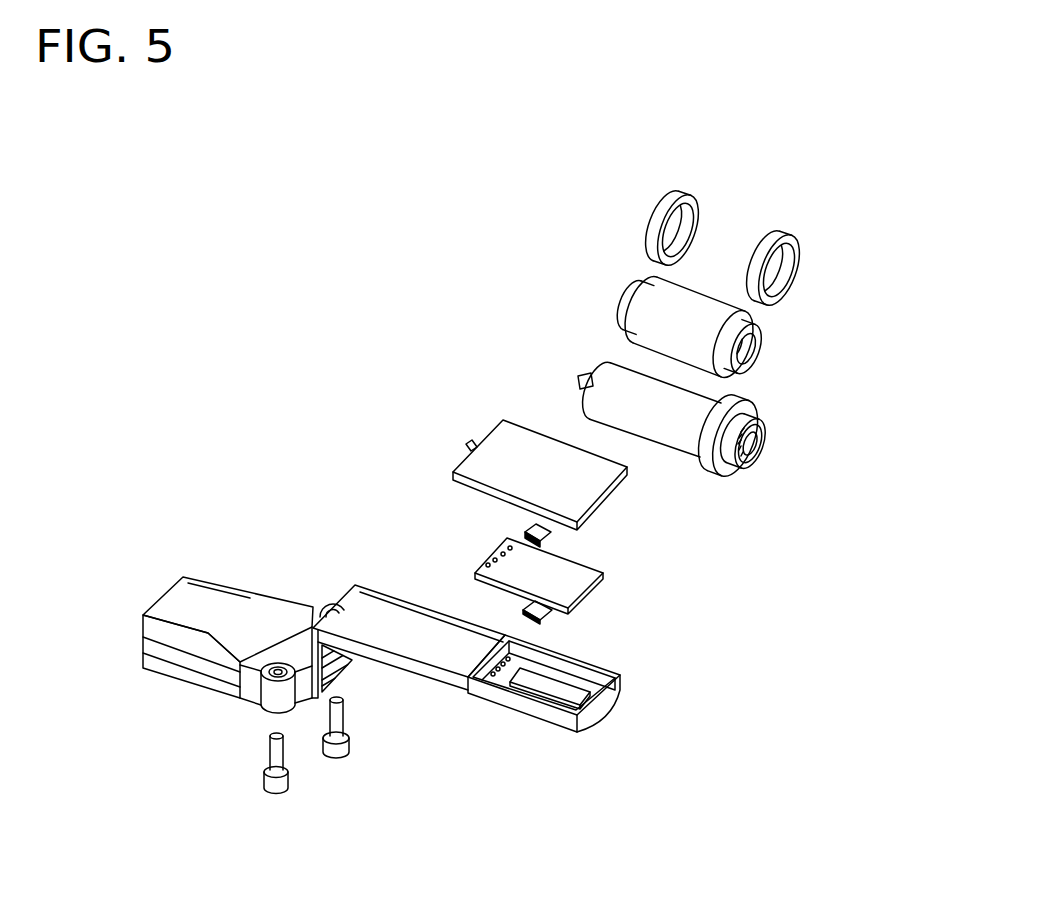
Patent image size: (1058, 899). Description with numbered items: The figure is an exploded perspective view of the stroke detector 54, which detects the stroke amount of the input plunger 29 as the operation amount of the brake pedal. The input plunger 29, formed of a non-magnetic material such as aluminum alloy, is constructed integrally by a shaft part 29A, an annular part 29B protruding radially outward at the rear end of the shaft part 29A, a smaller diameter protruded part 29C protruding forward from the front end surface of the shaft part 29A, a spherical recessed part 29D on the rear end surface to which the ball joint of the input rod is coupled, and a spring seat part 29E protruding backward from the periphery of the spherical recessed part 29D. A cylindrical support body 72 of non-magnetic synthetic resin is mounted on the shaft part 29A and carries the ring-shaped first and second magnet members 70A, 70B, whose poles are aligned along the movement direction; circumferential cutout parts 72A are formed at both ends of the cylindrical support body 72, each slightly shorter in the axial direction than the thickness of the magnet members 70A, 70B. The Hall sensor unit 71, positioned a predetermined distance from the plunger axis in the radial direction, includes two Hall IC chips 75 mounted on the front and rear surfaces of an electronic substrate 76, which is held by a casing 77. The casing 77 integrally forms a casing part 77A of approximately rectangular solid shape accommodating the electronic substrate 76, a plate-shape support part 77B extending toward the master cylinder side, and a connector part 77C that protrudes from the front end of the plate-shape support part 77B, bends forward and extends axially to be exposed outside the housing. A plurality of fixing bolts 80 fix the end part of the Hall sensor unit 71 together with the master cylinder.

The stroke detector 54 is at (442, 393).
The first magnet member 70A is at (672, 191).
The second magnet member 70B is at (782, 230).
The cylindrical support body 72 is at (698, 302).
The cutout part 72A is at (626, 298).
The input plunger 29 is at (773, 408).
The shaft part 29A is at (667, 430).
The annular part 29B is at (707, 472).
The smaller diameter protruded part 29C is at (578, 378).
The spherical recessed part 29D is at (762, 441).
The spring seat part 29E is at (745, 468).
The Hall IC chip 75 is at (525, 530).
The electronic substrate 76 is at (578, 585).
The casing 77 is at (372, 580).
The casing part 77A is at (505, 712).
The plate-shape support part 77B is at (418, 676).
The connector part 77C is at (174, 597).
The Hall sensor unit 71 is at (188, 700).
The fixing bolt 80 is at (337, 758).